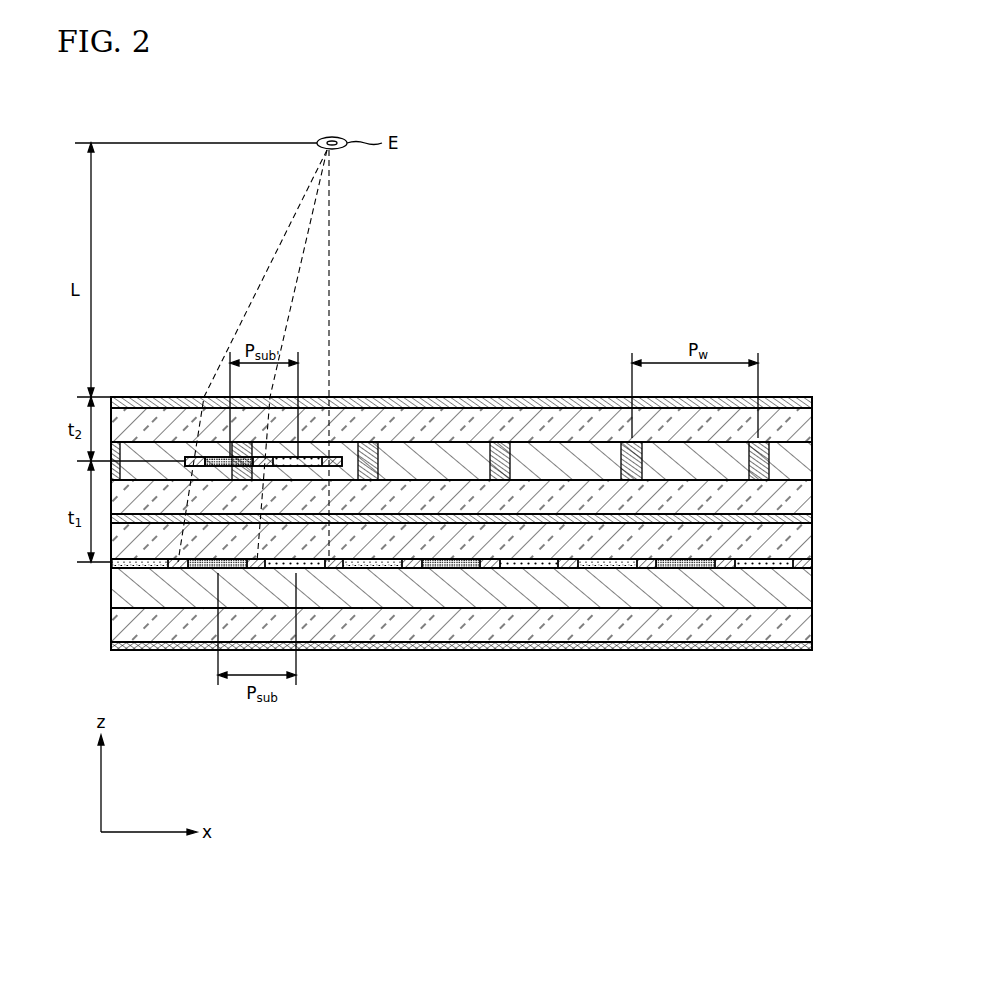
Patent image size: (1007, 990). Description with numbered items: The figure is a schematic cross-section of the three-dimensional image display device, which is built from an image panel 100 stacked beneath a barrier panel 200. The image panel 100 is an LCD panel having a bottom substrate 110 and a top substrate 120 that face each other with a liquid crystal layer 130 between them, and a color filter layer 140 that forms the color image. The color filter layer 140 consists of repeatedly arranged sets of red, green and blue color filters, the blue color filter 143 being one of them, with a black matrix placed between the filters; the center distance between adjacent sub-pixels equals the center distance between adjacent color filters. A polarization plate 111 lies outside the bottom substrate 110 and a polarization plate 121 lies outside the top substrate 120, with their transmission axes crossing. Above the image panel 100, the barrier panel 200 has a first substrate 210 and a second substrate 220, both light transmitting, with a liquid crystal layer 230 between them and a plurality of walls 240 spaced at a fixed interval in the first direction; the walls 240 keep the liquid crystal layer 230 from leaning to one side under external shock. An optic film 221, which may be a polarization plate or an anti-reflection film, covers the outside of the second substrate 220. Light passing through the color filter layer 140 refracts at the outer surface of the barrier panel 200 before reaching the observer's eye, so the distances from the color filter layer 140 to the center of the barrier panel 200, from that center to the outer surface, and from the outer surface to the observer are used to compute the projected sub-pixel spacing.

The image panel 100 is at (326, 749).
The bottom substrate 110 is at (373, 625).
The polarization plate 111 is at (328, 648).
The top substrate 120 is at (685, 550).
The polarization plate 121 is at (733, 522).
The liquid crystal layer 130 is at (408, 592).
The color filter layer 140 is at (461, 648).
The blue color filter 143 is at (605, 566).
The barrier panel 200 is at (591, 319).
The first substrate 210 is at (422, 498).
The second substrate 220 is at (543, 425).
The optic film 221 is at (587, 407).
The liquid crystal layer 230 is at (452, 460).
The walls 240 is at (504, 450).